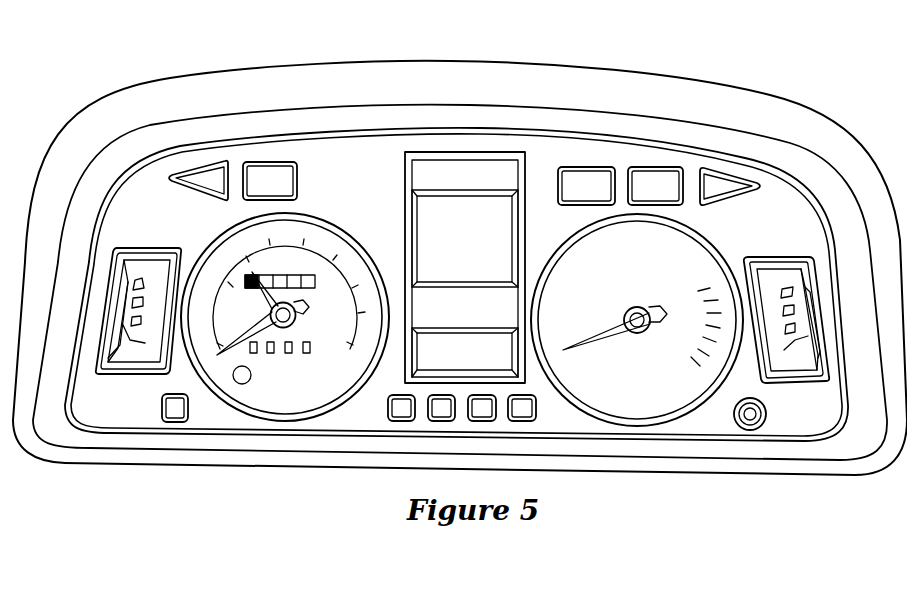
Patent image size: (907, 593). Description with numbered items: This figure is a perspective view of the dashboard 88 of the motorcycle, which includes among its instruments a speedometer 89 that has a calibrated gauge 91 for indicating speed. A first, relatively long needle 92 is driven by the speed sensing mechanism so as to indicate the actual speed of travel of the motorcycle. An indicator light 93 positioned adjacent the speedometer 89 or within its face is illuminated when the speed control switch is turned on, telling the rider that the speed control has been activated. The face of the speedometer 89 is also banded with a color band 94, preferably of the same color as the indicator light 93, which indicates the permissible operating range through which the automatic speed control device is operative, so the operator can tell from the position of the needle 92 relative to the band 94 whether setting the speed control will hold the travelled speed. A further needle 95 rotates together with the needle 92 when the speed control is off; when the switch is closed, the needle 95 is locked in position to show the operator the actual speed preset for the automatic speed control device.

The dashboard 88 is at (633, 140).
The speedometer 89 is at (360, 210).
The calibrated gauge 91 is at (343, 270).
The first needle 92 is at (237, 345).
The indicator light 93 is at (251, 372).
The color band 94 is at (263, 263).
The further needle 95 is at (267, 303).